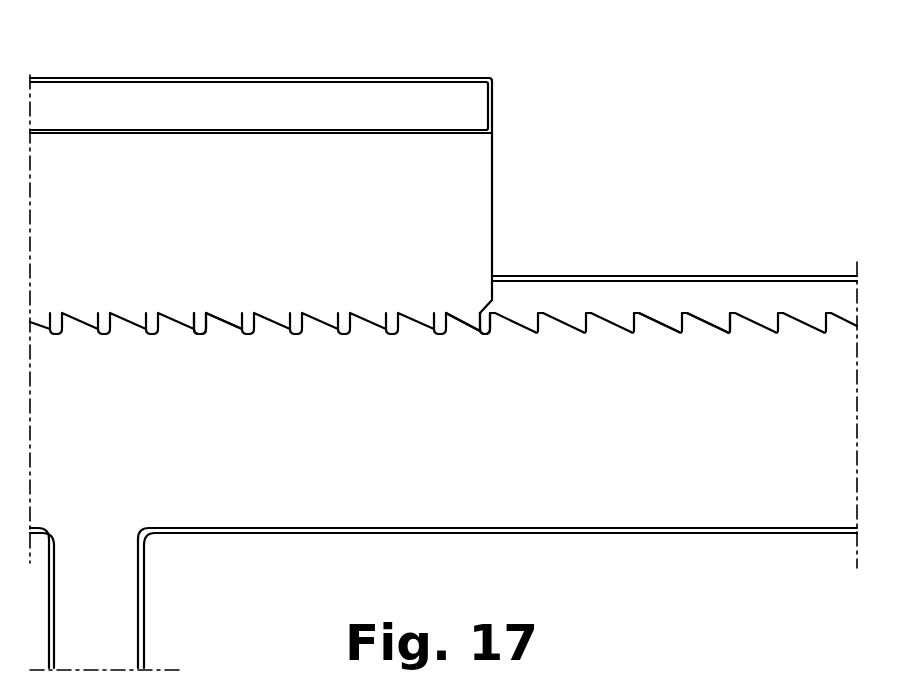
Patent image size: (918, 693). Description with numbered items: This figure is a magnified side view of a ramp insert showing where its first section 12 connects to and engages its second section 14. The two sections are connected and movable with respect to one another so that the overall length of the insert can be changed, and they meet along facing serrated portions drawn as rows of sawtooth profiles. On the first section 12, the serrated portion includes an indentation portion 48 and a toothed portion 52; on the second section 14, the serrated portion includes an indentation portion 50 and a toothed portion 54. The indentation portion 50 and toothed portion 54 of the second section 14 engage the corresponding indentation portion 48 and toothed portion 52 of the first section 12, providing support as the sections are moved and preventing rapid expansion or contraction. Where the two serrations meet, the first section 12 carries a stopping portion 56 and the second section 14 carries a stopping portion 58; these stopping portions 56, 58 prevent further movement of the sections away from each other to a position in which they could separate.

The first section 12 is at (178, 78).
The second section 14 is at (553, 279).
The indentation portion 48 is at (193, 311).
The toothed portion 52 is at (235, 321).
The stopping portion 56 is at (468, 322).
The stopping portion 58 is at (490, 324).
The toothed portion 54 is at (637, 323).
The indentation portion 50 is at (680, 330).